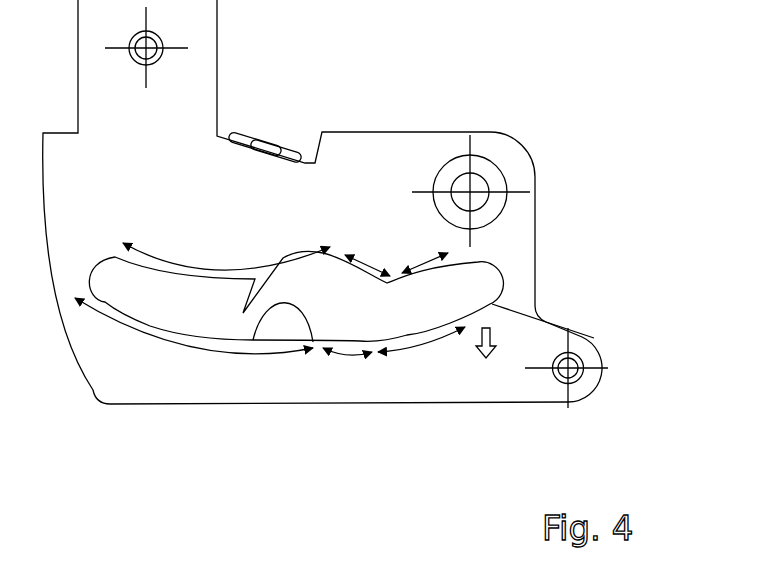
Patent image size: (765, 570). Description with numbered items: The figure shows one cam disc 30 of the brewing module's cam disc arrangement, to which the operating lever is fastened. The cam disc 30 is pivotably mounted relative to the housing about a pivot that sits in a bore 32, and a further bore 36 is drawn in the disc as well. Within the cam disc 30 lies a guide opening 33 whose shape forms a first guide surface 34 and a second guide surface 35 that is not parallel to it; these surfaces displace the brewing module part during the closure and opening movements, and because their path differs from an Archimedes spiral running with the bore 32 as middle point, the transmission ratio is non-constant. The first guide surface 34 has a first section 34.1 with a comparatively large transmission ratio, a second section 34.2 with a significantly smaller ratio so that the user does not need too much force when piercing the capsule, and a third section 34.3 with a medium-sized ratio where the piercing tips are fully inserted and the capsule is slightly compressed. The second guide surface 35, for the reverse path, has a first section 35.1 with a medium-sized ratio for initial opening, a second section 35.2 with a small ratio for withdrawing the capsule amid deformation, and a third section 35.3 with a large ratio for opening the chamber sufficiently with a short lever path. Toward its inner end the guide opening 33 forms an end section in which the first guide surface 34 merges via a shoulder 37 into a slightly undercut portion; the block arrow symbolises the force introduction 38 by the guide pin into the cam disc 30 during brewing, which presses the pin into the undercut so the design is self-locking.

The cam disc 30 is at (380, 187).
The bore 32 is at (466, 190).
The guide opening 33 is at (218, 303).
The first guide surface 34 is at (315, 342).
The first section 34.1 is at (128, 338).
The second section 34.2 is at (340, 356).
The third section 34.3 is at (422, 350).
The second guide surface 35 is at (243, 313).
The first section 35.1 is at (482, 270).
The second section 35.2 is at (377, 268).
The third section 35.3 is at (163, 260).
The pivot pin 36 is at (602, 345).
The shoulder 37 is at (470, 320).
The force introduction 38 is at (492, 340).